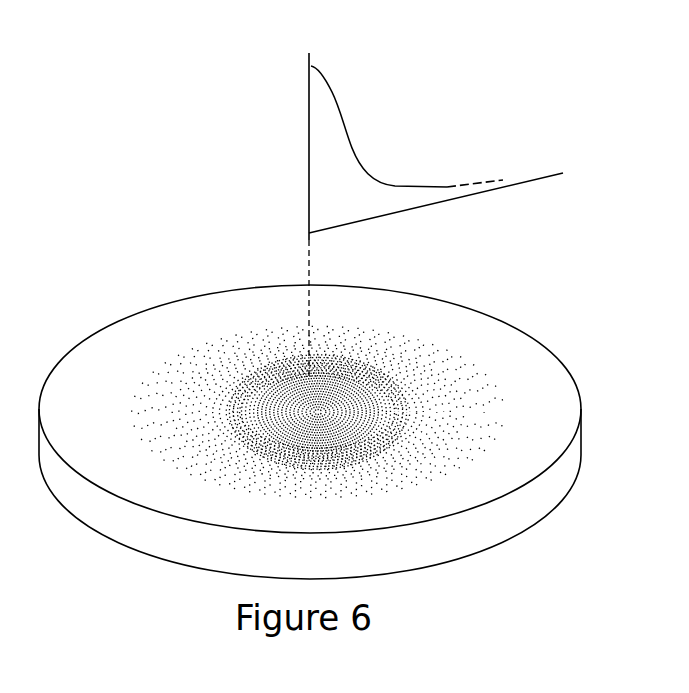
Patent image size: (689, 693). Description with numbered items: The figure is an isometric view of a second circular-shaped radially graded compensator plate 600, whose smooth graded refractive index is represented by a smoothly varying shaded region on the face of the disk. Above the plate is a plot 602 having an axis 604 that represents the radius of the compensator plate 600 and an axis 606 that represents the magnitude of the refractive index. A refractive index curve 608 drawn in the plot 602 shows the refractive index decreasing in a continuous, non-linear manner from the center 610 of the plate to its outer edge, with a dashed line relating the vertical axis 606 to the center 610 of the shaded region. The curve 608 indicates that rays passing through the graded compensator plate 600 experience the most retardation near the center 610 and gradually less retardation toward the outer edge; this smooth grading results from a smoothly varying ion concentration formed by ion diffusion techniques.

The graded compensator plate 600 is at (104, 190).
The plot 602 is at (433, 132).
The axis 604 is at (540, 177).
The axis 606 is at (309, 62).
The curve n(r) 608 is at (347, 135).
The center 610 is at (307, 387).